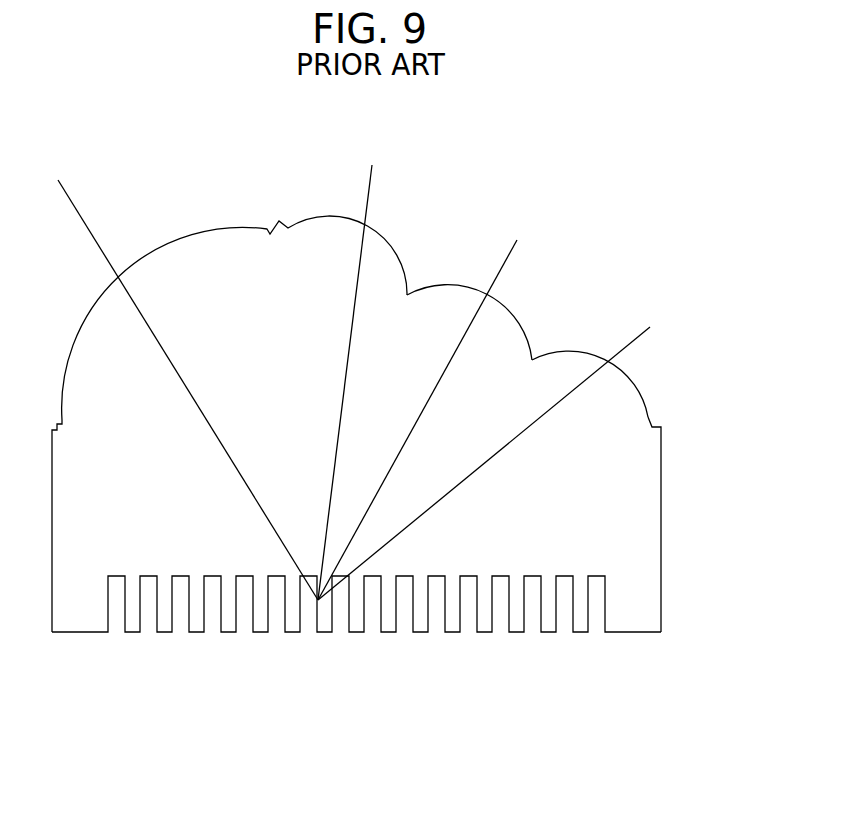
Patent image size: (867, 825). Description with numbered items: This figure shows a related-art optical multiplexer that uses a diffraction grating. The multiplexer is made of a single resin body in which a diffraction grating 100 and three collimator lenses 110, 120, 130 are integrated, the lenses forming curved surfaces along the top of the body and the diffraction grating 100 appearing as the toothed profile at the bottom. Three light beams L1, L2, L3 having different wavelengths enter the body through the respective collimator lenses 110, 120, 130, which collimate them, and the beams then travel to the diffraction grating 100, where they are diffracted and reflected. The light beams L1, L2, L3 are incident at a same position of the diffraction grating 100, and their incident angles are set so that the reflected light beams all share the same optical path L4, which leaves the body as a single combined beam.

The diffraction grating 100 is at (605, 645).
The collimator lens 110 is at (383, 242).
The collimator lens 120 is at (520, 323).
The collimator lens 130 is at (638, 389).
The light beam L1 is at (375, 188).
The light beam L2 is at (511, 263).
The light beam L3 is at (625, 341).
The optical path L4 is at (96, 226).